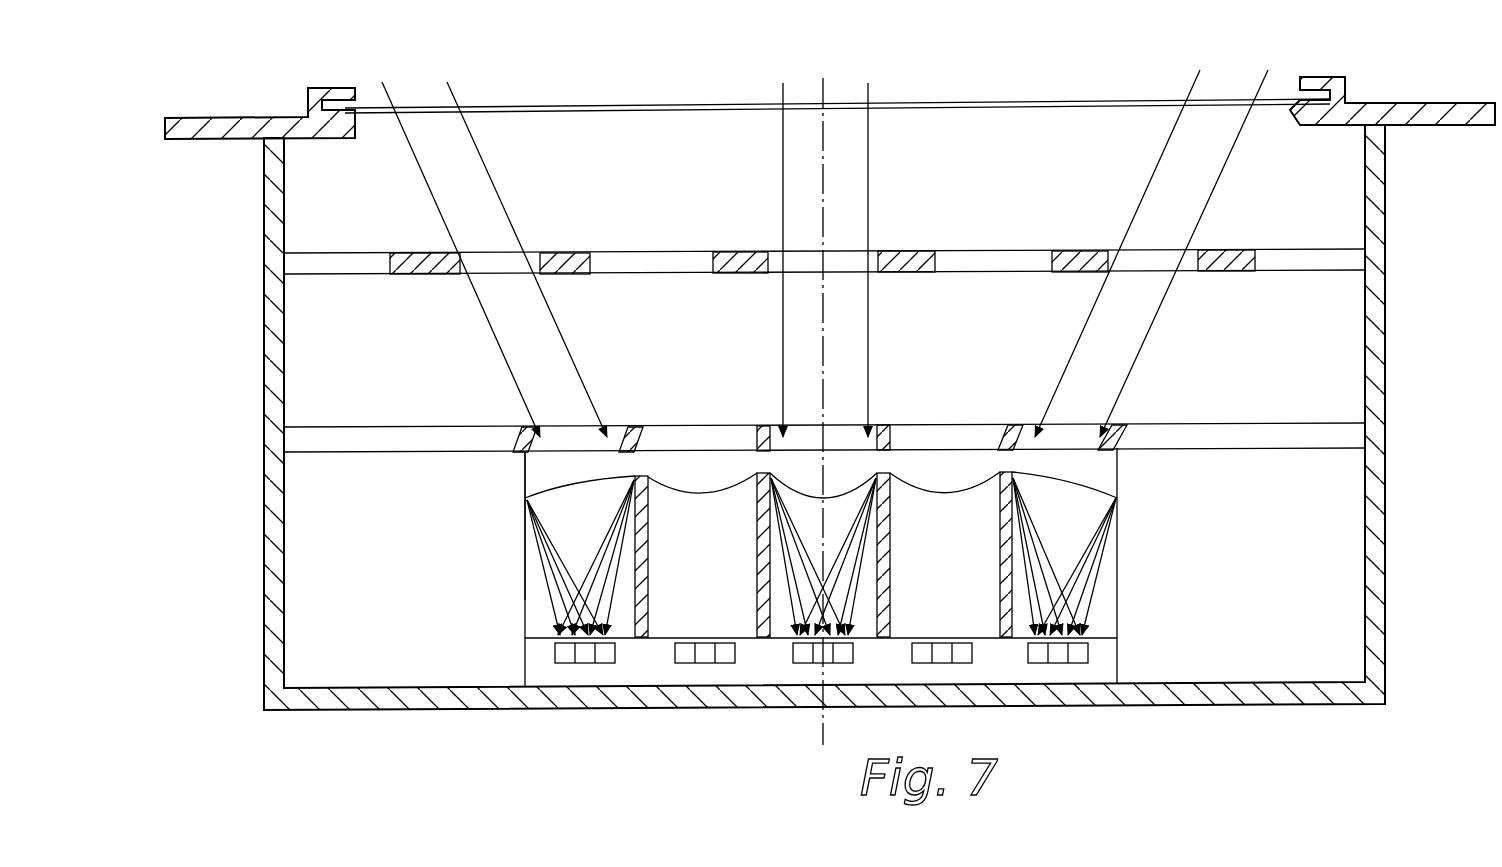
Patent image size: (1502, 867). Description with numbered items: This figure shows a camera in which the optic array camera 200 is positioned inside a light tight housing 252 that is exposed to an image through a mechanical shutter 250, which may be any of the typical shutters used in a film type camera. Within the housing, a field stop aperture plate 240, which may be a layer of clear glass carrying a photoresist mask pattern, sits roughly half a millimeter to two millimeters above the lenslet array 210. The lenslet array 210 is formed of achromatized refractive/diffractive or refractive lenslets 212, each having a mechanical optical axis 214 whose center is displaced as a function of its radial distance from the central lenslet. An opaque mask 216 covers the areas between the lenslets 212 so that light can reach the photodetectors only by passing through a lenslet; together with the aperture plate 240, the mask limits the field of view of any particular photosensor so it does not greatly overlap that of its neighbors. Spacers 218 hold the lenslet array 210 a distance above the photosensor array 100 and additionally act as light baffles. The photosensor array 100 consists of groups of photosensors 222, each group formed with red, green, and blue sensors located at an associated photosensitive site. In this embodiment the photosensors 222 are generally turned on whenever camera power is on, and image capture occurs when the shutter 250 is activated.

The photosensor array 100 is at (525, 650).
The optic array camera 200 is at (430, 378).
The lenslet array 210 is at (1117, 482).
The lenslet 212 is at (535, 478).
The mechanical optical axis 214 is at (525, 500).
The opaque mask 216 is at (628, 427).
The spacer 218 is at (1000, 573).
The photosensor group 222 is at (734, 668).
The field stop aperture plate 240 is at (565, 250).
The mechanical shutter 250 is at (590, 107).
The light tight housing 252 is at (213, 118).